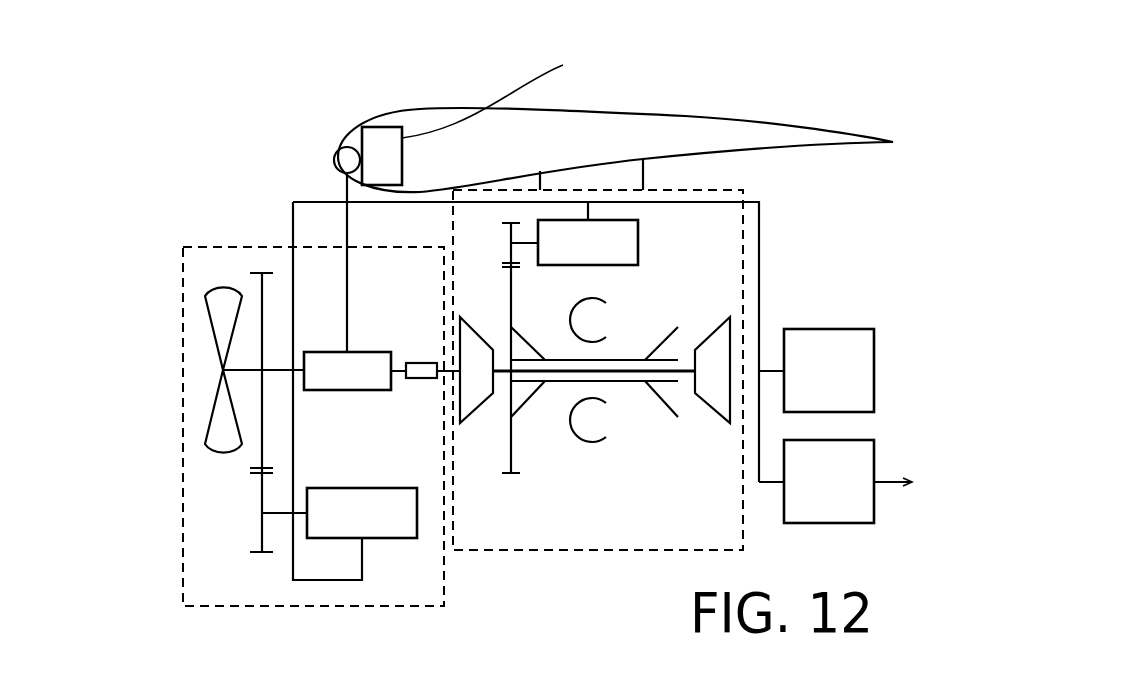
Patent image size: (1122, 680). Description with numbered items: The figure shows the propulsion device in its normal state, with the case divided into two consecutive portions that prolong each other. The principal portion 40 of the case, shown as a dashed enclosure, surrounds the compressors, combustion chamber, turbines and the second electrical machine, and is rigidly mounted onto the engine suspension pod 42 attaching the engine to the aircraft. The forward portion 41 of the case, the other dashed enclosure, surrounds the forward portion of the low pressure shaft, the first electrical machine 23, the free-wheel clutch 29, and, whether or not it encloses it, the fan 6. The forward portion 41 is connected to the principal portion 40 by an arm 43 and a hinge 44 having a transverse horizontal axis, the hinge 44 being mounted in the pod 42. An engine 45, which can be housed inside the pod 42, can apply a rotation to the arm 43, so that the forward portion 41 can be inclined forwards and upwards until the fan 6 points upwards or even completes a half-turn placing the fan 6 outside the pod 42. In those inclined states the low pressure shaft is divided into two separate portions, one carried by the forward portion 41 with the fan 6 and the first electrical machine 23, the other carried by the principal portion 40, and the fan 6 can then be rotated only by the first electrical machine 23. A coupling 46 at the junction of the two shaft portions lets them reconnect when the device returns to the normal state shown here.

The fan 6 is at (220, 432).
The first electrical machine 23 is at (378, 523).
The free-wheel clutch 29 is at (352, 377).
The principal portion 40 is at (485, 550).
The forward portion 41 is at (183, 403).
The engine suspension pod 42 is at (685, 115).
The arm 43 is at (347, 220).
The hinge 44 is at (347, 162).
The engine 45 is at (501, 90).
The coupling 46 is at (423, 368).